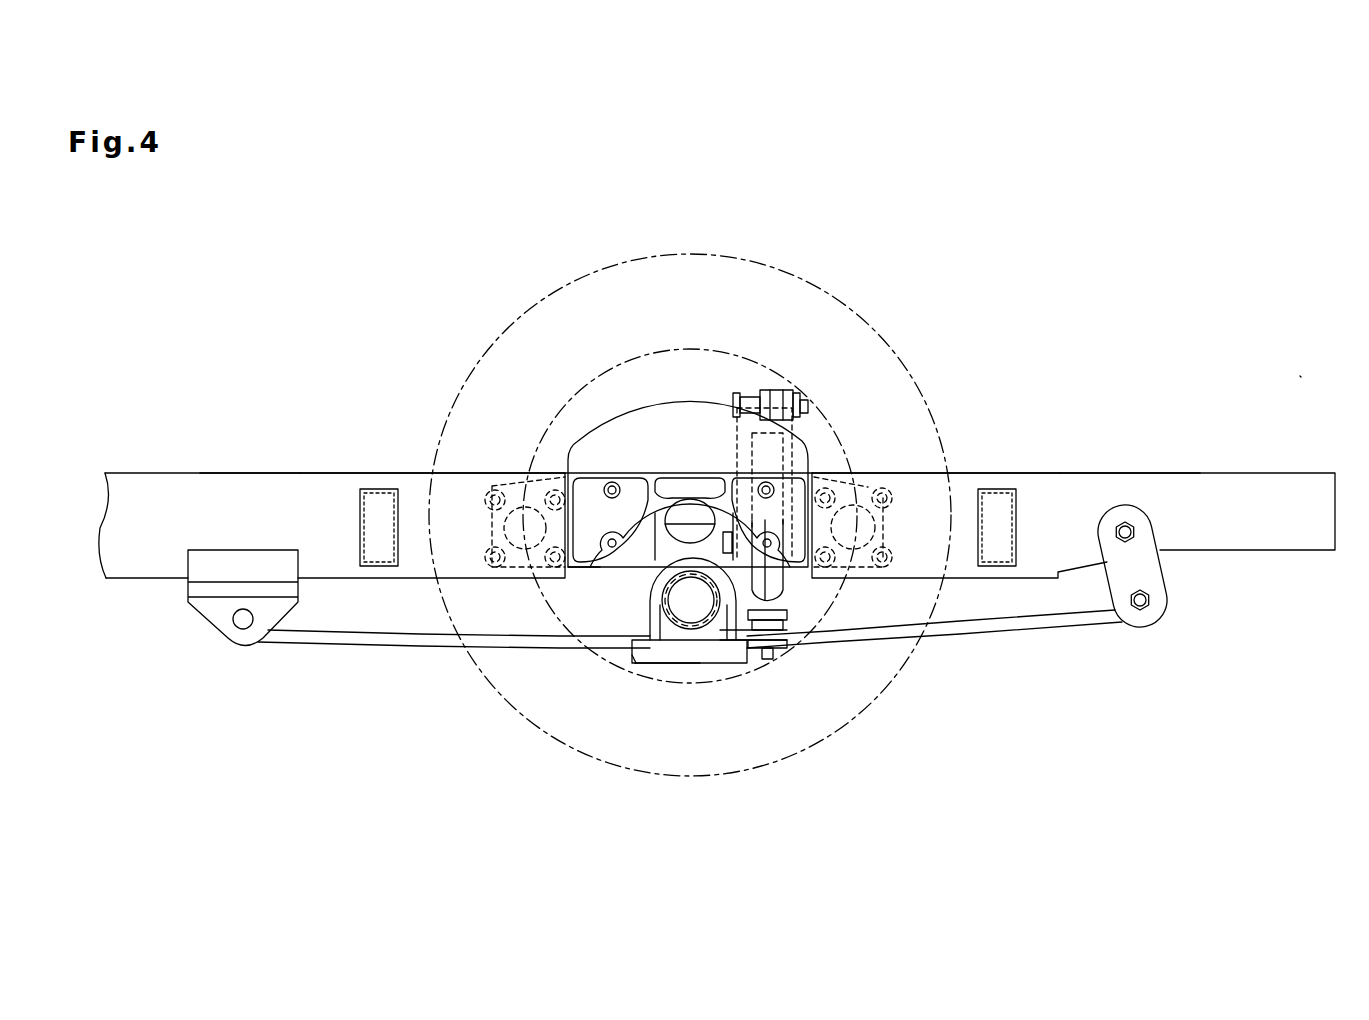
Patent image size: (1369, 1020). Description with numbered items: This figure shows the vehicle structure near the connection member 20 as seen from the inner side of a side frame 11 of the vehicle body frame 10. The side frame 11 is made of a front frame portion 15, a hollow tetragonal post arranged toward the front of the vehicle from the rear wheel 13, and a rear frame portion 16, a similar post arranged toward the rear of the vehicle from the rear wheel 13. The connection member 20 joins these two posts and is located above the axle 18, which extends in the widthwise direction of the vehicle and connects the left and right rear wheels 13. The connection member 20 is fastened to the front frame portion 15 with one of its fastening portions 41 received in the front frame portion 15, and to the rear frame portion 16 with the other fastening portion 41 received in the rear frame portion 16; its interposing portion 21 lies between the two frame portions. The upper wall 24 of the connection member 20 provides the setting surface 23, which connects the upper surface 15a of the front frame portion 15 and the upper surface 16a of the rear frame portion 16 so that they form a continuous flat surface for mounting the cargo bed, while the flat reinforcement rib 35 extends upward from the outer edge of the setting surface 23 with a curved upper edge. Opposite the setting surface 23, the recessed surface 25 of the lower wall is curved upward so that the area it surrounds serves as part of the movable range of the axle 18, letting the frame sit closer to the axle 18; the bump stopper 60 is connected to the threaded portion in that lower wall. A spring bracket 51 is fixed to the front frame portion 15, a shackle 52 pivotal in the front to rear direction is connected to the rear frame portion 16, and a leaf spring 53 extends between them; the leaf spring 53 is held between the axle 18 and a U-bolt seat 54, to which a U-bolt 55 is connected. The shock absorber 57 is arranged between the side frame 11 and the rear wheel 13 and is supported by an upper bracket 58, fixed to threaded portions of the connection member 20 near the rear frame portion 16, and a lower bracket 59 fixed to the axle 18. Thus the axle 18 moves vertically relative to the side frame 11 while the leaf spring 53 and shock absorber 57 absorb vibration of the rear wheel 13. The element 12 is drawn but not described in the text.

The vehicle body frame 10 is at (1298, 377).
The side frame 11 is at (1241, 466).
The mounting bushing 12 is at (372, 567).
The rear wheel 13 is at (797, 280).
The front frame portion 15 is at (230, 472).
The upper surface of the front frame portion 15a is at (303, 472).
The rear frame portion 16 is at (1103, 477).
The upper surface of the rear frame portion 16a is at (1033, 472).
The axle 18 is at (650, 607).
The connection member 20 is at (640, 414).
The interposing portion 21 is at (615, 565).
The setting surface 23 is at (622, 473).
The upper wall 24 is at (668, 473).
The recessed surface 25 is at (634, 530).
The reinforcement rib 35 is at (677, 411).
The fastening portion 41 is at (521, 487).
The spring bracket 51 is at (214, 617).
The shackle 52 is at (1152, 573).
The leaf spring 53 is at (1043, 626).
The U-bolt seat 54 is at (709, 662).
The U-bolt 55 is at (644, 664).
The shock absorber 57 is at (778, 588).
The upper bracket 58 is at (741, 398).
The lower bracket 59 is at (777, 657).
The bump stopper 60 is at (692, 517).